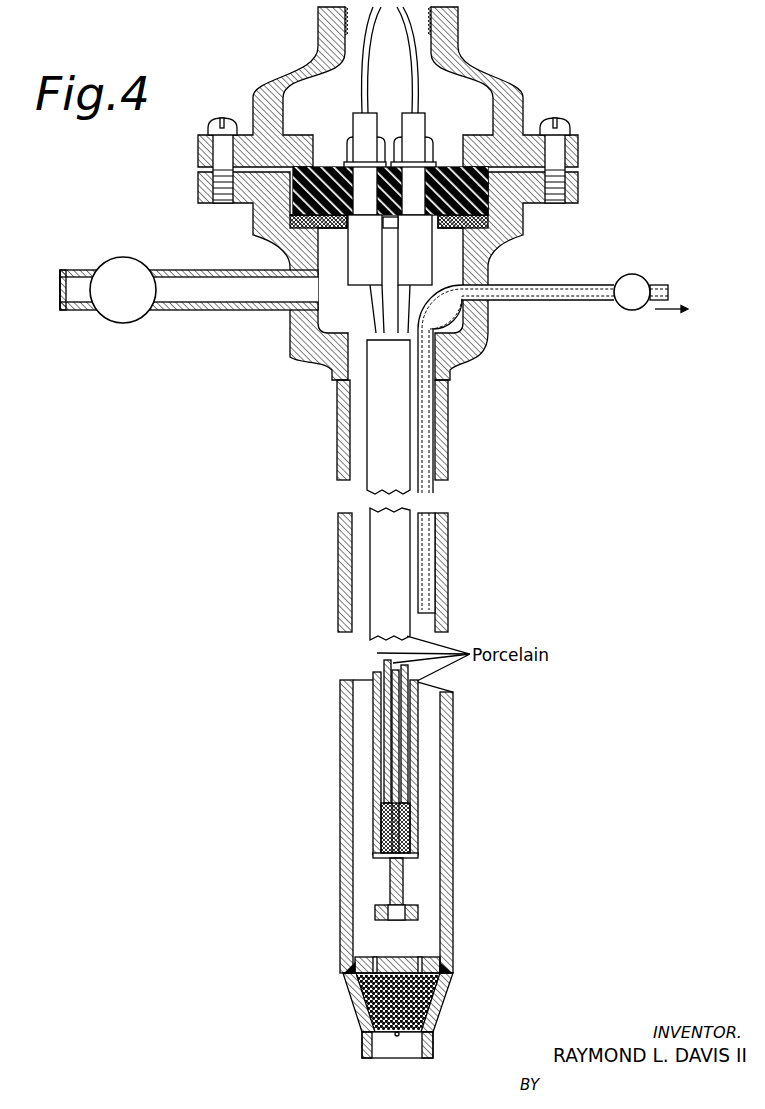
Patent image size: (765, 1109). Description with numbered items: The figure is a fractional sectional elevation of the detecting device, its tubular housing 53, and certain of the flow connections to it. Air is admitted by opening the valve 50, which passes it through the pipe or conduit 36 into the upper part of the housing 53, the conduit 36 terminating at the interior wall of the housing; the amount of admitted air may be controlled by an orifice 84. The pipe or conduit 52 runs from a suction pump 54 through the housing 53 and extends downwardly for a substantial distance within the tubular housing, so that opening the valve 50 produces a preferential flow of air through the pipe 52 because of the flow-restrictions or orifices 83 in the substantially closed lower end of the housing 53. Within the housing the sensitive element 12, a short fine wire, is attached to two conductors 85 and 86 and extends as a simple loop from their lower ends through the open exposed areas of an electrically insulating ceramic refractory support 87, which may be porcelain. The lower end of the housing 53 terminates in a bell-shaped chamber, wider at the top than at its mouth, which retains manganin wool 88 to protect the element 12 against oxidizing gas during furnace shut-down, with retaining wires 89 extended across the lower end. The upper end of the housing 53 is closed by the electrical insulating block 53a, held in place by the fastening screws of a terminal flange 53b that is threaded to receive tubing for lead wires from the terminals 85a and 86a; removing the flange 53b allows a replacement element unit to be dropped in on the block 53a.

The terminal flange 53b is at (470, 47).
The housing 53 is at (518, 230).
The electrical insulating block 53a is at (463, 165).
The terminal 85a is at (353, 128).
The terminal 86a is at (425, 112).
The pipe or conduit 36 is at (249, 311).
The orifice 84 is at (60, 292).
The valve 50 is at (136, 322).
The pipe or conduit 52 is at (566, 303).
The suction pump 54 is at (636, 273).
The conductor 85 is at (385, 721).
The conductor 86 is at (404, 721).
The electrically insulating ceramic refractory support 87 is at (376, 776).
The sensitive element 12 is at (406, 893).
The flow-restrictions or orifices 83 is at (347, 971).
The manganin wool 88 is at (443, 1011).
The retaining wires 89 is at (397, 1066).